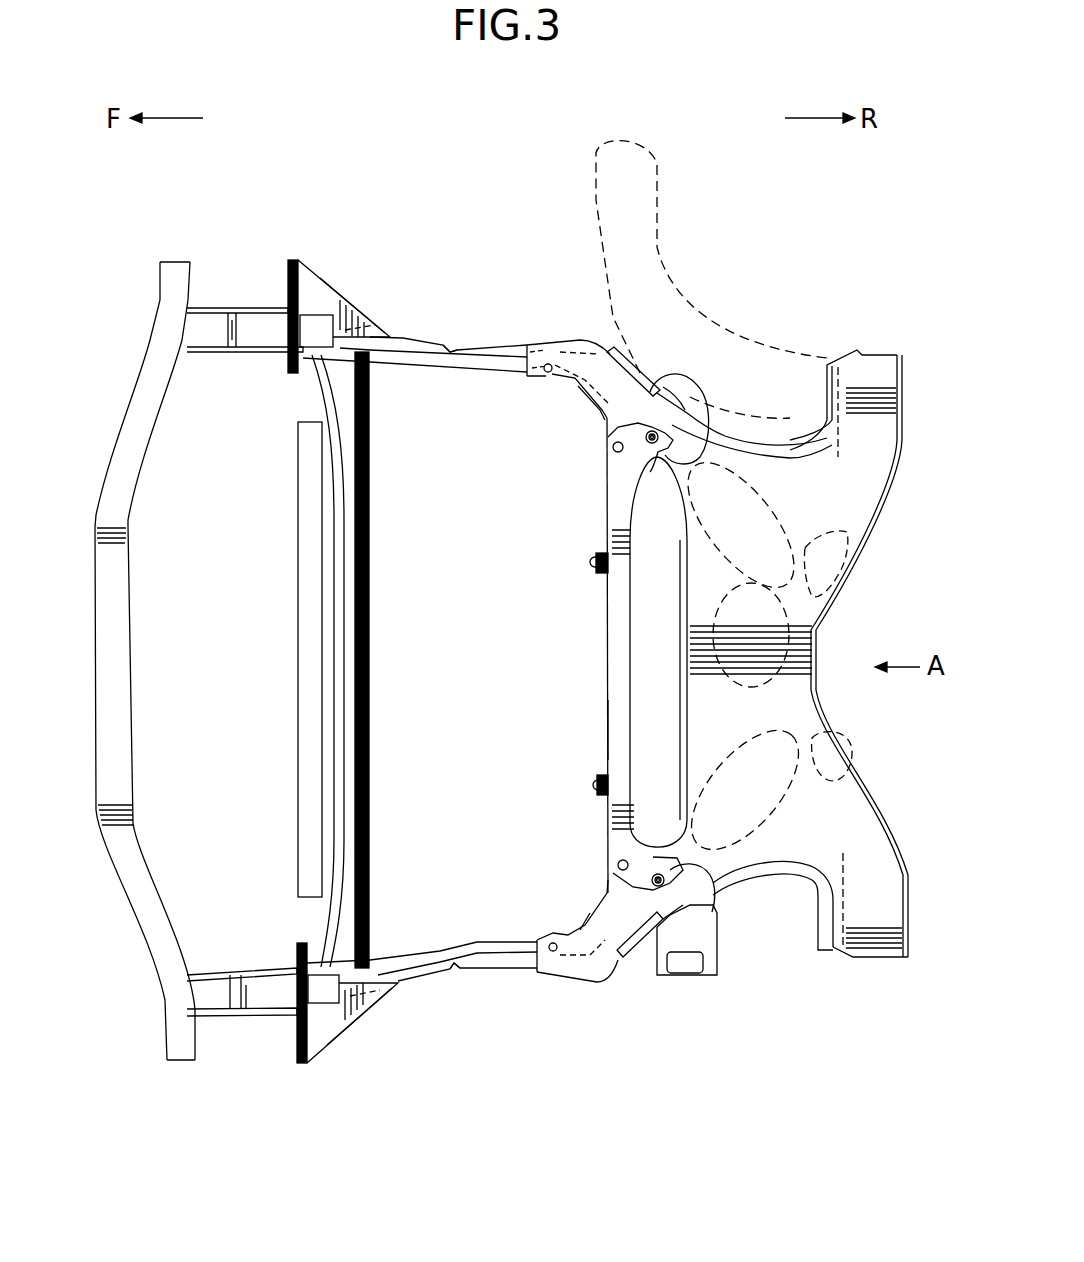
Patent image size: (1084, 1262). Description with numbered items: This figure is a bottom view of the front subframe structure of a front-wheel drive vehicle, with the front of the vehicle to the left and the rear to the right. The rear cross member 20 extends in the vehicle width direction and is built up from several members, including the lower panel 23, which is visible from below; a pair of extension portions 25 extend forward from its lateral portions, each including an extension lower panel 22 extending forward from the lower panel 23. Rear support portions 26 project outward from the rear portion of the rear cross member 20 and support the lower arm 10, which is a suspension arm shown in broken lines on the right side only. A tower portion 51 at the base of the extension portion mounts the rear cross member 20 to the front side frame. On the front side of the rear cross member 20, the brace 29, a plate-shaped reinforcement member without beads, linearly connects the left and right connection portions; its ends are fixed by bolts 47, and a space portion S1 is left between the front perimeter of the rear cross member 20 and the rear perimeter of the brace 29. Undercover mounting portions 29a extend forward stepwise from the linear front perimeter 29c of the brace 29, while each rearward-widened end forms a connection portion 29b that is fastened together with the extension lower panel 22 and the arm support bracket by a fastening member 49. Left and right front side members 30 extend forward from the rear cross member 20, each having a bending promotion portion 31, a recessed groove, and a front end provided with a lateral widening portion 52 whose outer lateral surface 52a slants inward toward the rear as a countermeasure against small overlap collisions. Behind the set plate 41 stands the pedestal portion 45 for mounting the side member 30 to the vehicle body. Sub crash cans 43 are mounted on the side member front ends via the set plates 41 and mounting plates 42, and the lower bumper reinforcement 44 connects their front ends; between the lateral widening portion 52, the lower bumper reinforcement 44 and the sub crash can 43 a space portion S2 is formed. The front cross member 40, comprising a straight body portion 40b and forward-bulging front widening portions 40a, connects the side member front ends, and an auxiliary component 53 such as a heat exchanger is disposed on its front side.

The lower arm 10 is at (658, 228).
The rear cross member 20 is at (822, 633).
The extension lower panel 22 is at (627, 382).
The lower panel 23 is at (857, 503).
The extension portion 25 is at (557, 340).
The rear support portion 26 is at (885, 378).
The brace 29 is at (606, 637).
The undercover mounting portion 29a is at (591, 562).
The connection portion 29b is at (683, 472).
The front perimeter 29c is at (610, 733).
The front side member 30 is at (488, 345).
The bending promotion portion 31 is at (450, 348).
The front cross member 40 is at (352, 660).
The front widening portion 40a is at (315, 362).
The body portion 40b is at (369, 617).
The set plate 41 is at (292, 268).
The mounting plate 42 is at (288, 300).
The sub crash can 43 is at (207, 353).
The lower bumper reinforcement 44 is at (96, 625).
The pedestal portion 45 is at (320, 315).
The bolt 47 is at (608, 455).
The fastening member 49 is at (740, 380).
The tower portion 51 is at (717, 965).
The lateral widening portion 52 is at (318, 264).
The outer lateral surface 52a is at (357, 305).
The auxiliary component 53 is at (298, 572).
The space portion S1 is at (660, 683).
The space portion S2 is at (208, 283).